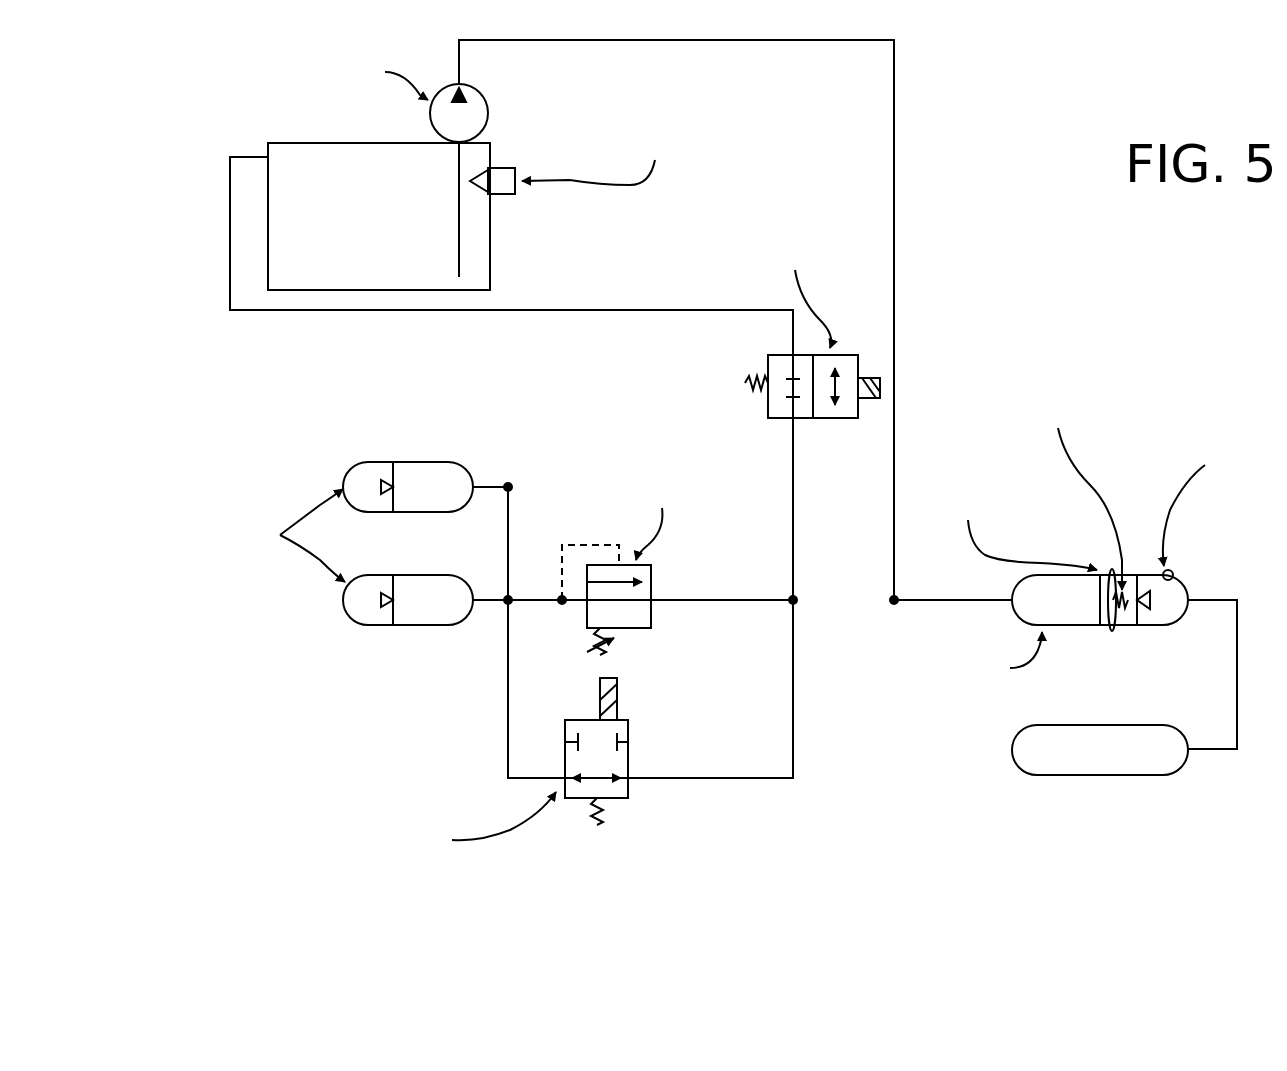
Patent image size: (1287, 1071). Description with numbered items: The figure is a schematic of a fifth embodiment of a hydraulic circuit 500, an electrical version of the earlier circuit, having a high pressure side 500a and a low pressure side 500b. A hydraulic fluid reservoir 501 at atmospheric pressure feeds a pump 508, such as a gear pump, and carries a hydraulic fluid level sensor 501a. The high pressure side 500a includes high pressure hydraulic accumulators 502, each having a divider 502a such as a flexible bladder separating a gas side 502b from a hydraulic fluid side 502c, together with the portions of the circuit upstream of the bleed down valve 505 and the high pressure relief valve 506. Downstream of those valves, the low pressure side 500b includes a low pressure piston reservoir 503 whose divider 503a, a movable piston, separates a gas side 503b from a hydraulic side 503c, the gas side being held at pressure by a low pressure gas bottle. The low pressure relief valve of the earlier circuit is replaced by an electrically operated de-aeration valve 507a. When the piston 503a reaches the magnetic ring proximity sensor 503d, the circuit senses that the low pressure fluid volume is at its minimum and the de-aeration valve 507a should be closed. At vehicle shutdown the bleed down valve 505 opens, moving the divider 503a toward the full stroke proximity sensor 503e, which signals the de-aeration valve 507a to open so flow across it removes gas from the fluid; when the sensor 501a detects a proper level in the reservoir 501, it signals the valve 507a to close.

The hydraulic circuit 500 is at (999, 128).
The high pressure side 500a is at (371, 660).
The low pressure side 500b is at (846, 841).
The hydraulic fluid reservoir 501 is at (475, 228).
The hydraulic fluid level sensor 501a is at (508, 168).
The high pressure hydraulic accumulator 502 is at (372, 462).
The divider 502a is at (400, 462).
The gas side 502b is at (350, 478).
The hydraulic fluid side 502c is at (450, 585).
The low pressure piston reservoir 503 is at (1222, 588).
The divider 503a is at (1135, 626).
The gas side 503b is at (1172, 610).
The hydraulic side 503c is at (1018, 610).
The magnetic ring proximity sensor 503d is at (1105, 574).
The full stroke proximity sensor 503e is at (1168, 570).
The bleed down valve 505 is at (628, 731).
The high pressure relief valve 506 is at (652, 578).
The de-aeration valve 507a is at (832, 420).
The pump 508 is at (488, 100).